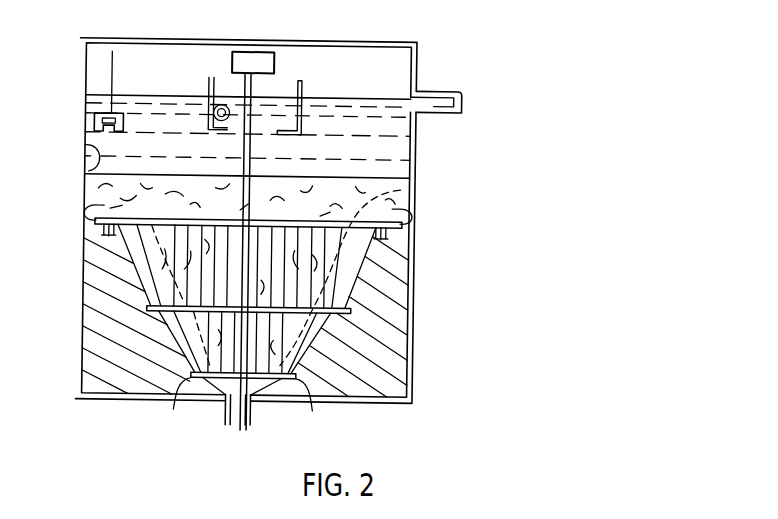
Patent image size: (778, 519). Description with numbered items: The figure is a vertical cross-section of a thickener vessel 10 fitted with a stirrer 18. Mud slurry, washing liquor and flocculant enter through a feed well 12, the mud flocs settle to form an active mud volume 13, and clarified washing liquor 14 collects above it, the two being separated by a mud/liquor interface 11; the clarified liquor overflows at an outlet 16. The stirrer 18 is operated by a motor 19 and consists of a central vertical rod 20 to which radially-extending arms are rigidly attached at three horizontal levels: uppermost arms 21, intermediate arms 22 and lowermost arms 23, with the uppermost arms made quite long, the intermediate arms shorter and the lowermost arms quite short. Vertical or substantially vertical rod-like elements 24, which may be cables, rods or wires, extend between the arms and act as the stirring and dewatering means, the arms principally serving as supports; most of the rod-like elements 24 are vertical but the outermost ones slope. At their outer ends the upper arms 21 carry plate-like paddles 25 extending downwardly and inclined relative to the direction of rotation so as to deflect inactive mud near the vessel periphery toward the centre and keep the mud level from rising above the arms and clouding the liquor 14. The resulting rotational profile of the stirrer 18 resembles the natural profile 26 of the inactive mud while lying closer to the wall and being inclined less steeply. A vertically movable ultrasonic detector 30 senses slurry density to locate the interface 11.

The thickener vessel 10 is at (72, 115).
The mud/liquor interface 11 is at (84, 152).
The feed well 12 is at (300, 84).
The active mud volume 13 is at (84, 177).
The clarified washing liquor 14 is at (392, 153).
The outlet 16 is at (430, 89).
The stirrer 18 is at (250, 218).
The motor 19 is at (273, 61).
The central vertical rod 20 is at (241, 150).
The uppermost arms 21 is at (80, 216).
The intermediate arms 22 is at (148, 310).
The lowermost arms 23 is at (192, 380).
The rod-like elements 24 is at (185, 302).
The plate-like paddles 25 is at (110, 240).
The natural profile of the inactive mud 26 is at (400, 188).
The detector 30 is at (120, 116).